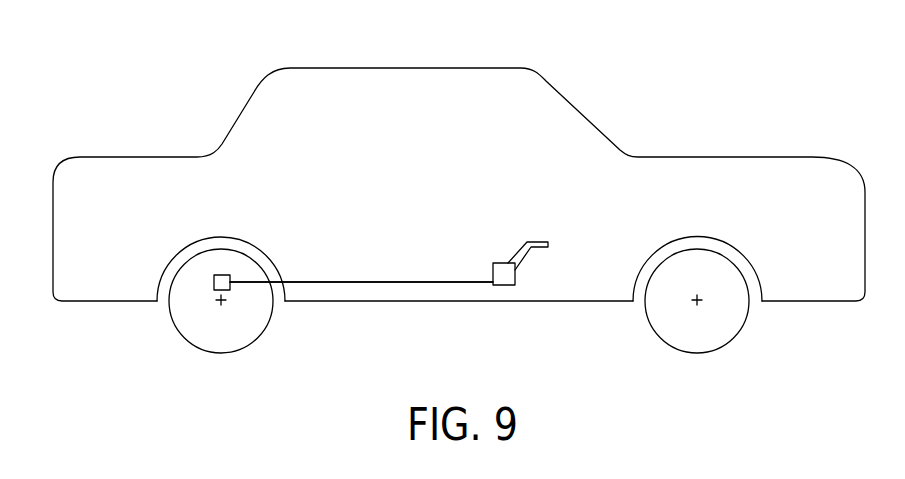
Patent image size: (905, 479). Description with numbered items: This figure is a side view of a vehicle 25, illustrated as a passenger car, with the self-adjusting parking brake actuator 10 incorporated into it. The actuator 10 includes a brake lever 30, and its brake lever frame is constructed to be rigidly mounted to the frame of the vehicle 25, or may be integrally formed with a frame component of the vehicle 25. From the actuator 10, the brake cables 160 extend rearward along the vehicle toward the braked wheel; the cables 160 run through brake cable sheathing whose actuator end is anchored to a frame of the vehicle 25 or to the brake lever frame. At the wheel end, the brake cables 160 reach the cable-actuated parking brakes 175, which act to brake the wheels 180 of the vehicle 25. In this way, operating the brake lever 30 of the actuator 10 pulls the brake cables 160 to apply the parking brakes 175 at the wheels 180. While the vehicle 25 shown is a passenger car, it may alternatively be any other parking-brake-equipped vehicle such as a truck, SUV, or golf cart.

The vehicle 25 is at (220, 83).
The self-adjusting parking brake actuator 10 is at (553, 227).
The brake lever 30 is at (522, 242).
The wheels 180 is at (213, 272).
The cable-actuated parking brakes 175 is at (215, 284).
The brake cables 160 is at (325, 282).